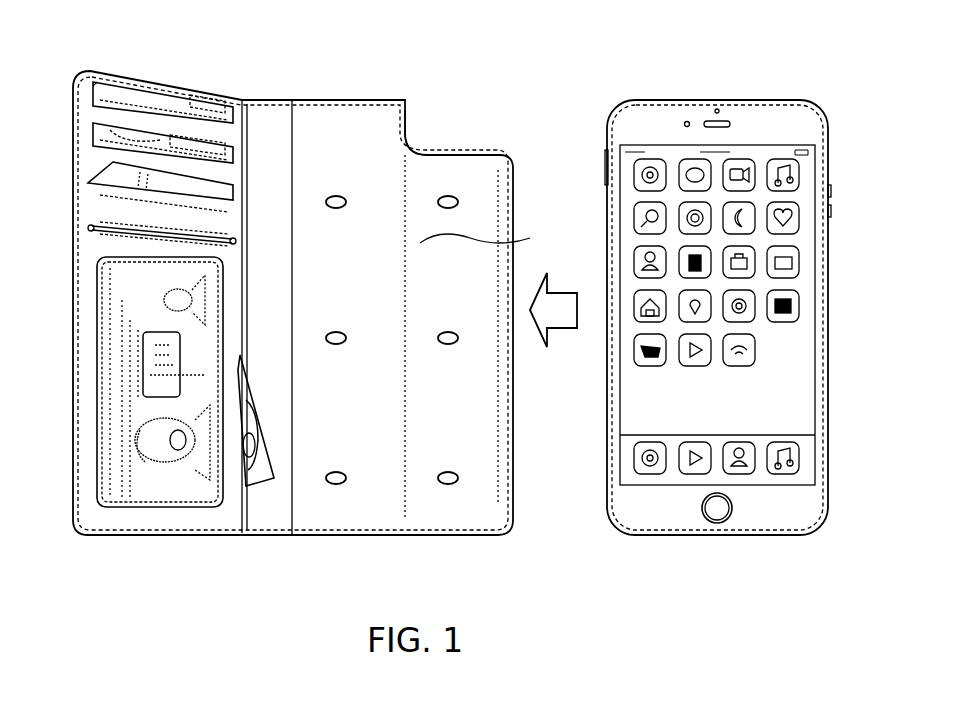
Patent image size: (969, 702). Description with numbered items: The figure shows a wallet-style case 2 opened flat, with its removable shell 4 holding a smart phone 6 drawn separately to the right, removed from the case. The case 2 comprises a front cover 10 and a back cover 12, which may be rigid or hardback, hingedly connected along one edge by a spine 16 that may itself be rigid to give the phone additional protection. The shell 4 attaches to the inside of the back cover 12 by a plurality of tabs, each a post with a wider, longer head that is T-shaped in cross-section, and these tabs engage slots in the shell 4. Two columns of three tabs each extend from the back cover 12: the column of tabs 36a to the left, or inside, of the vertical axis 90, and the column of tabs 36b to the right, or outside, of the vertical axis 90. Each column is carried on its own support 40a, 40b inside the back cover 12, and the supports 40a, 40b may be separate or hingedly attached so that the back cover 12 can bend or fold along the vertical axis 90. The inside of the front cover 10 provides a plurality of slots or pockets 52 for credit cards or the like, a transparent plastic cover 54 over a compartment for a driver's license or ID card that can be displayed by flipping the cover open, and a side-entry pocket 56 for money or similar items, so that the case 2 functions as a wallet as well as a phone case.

The case 2 is at (352, 78).
The removable shell 4 is at (607, 107).
The smart phone 6 is at (782, 122).
The front cover 10 is at (158, 57).
The back cover 12 is at (447, 120).
The spine 16 is at (269, 148).
The tabs of the a column 36a is at (338, 486).
The tabs of the b column 36b is at (448, 486).
The support for the a column 40a is at (367, 298).
The support for the b column 40b is at (478, 298).
The slots or pockets 52 is at (112, 100).
The transparent plastic cover 54 is at (118, 485).
The side-entry pocket 56 is at (240, 500).
The vertical axis 90 is at (491, 237).